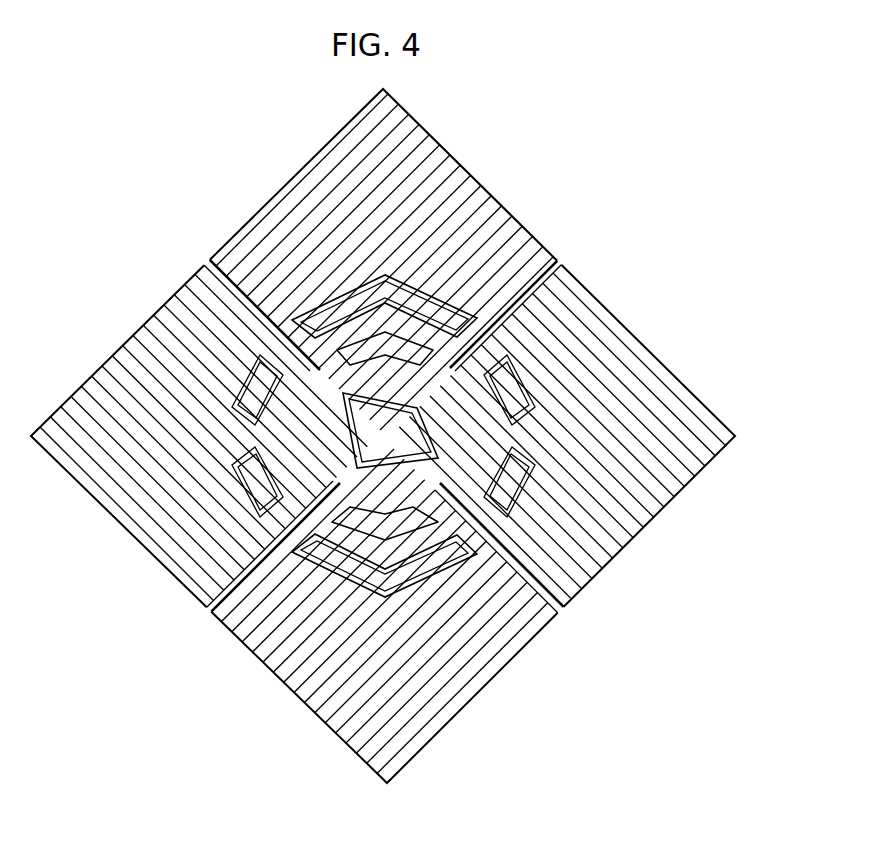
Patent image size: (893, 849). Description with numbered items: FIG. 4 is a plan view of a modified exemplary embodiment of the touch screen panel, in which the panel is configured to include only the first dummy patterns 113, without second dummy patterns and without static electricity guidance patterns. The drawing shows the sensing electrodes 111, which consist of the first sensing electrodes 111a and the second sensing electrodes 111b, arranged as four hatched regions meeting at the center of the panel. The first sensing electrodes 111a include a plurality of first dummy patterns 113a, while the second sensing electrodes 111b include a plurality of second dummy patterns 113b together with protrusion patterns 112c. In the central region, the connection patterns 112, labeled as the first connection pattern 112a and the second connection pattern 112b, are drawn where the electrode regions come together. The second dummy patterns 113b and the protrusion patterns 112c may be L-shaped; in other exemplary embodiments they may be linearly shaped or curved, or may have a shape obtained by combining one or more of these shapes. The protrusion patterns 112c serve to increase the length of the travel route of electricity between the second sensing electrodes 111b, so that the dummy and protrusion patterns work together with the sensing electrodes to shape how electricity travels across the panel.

The sensing electrodes 111 is at (125, 167).
The first sensing electrodes 111a is at (182, 307).
The second sensing electrodes 111b is at (257, 225).
The connection patterns 112 is at (766, 328).
The first connection pattern 112a is at (415, 438).
The second connection pattern 112b is at (398, 383).
The protrusion patterns 112c is at (488, 478).
The first dummy patterns 113 is at (70, 655).
The first dummy patterns 113a is at (243, 501).
The second dummy patterns 113b is at (313, 573).